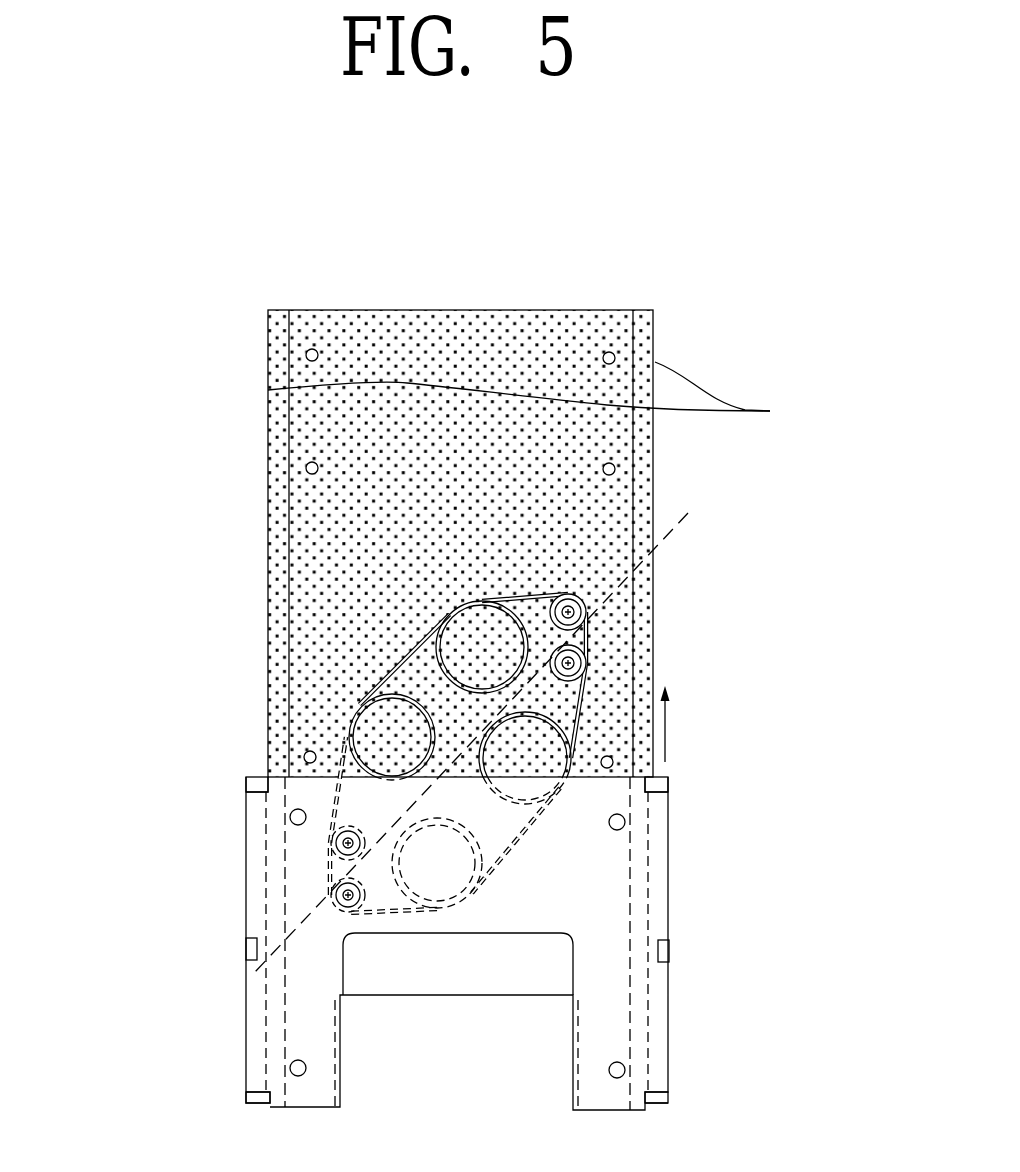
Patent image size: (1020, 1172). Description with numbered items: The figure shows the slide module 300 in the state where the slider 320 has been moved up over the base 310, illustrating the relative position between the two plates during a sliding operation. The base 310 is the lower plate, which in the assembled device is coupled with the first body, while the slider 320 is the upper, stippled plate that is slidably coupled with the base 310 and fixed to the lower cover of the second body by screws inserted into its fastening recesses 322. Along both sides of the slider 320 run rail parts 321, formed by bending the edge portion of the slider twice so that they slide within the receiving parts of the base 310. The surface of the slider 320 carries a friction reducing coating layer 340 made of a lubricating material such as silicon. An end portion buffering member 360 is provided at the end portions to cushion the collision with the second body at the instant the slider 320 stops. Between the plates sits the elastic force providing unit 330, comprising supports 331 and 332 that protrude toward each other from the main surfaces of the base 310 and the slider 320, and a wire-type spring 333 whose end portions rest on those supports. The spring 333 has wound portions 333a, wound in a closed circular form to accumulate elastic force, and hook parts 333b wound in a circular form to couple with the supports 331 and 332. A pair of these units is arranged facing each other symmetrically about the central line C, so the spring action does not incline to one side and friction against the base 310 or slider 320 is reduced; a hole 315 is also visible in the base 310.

The slide module 300 is at (198, 253).
The base 310 is at (243, 993).
The fastening hole 315 is at (627, 818).
The slider 320 is at (262, 435).
The rail parts 321 is at (547, 397).
The fastening recesses 322 is at (615, 345).
The elastic force providing unit 330 is at (327, 723).
The support 331 is at (260, 842).
The support 332 is at (453, 603).
The spring 333 is at (397, 647).
The wound portion 333a is at (385, 680).
The hook part 333b is at (507, 710).
The friction reducing coating layer 340 is at (503, 335).
The end portion buffering member 360 is at (663, 783).
The central line C is at (484, 728).